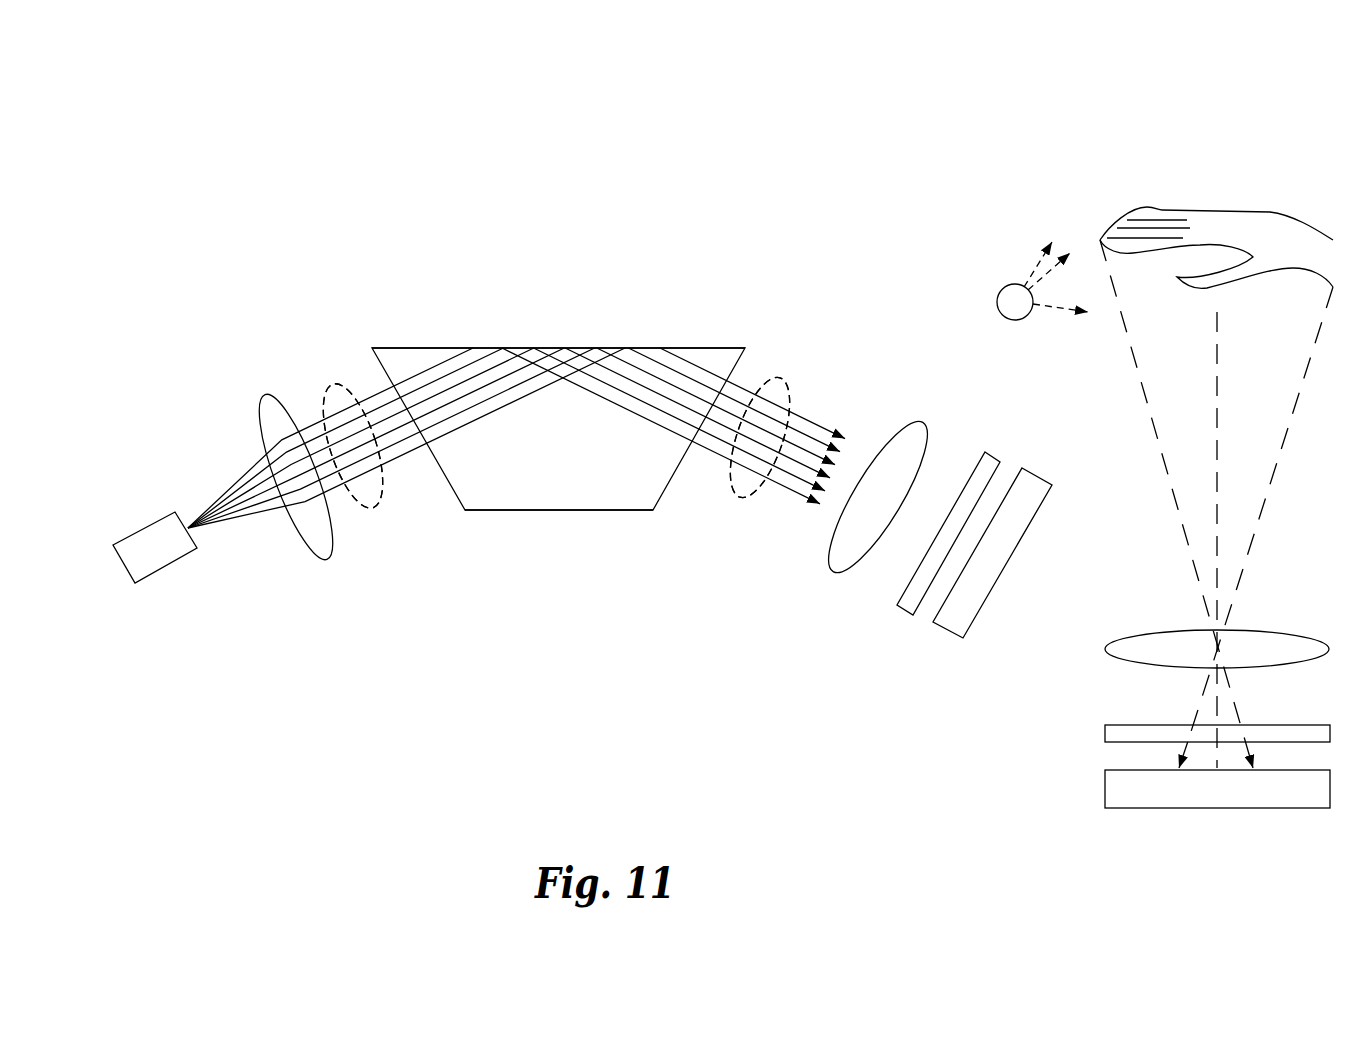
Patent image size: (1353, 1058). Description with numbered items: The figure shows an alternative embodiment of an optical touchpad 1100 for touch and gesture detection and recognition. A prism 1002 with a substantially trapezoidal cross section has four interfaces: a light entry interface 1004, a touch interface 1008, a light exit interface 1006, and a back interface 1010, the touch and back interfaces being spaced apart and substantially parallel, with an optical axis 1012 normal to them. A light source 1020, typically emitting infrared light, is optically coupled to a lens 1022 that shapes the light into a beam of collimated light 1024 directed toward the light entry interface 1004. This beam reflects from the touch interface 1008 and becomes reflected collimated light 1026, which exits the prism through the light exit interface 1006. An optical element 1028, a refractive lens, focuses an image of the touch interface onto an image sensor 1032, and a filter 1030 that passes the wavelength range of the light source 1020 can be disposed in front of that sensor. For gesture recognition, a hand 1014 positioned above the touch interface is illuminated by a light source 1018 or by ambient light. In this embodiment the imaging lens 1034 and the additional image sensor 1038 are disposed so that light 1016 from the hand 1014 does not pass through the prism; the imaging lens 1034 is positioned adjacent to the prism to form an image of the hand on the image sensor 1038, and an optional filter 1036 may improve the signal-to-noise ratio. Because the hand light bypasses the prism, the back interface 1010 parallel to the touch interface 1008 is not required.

The optical touchpad 1100 is at (236, 112).
The prism 1002 is at (593, 466).
The light entry interface 1004 is at (388, 492).
The light exit interface 1006 is at (782, 377).
The touch interface 1008 is at (693, 347).
The back interface 1010 is at (483, 512).
The optical axis 1012 is at (1217, 329).
The hand 1014 is at (1267, 212).
The light from hand 1016 is at (1247, 555).
The light source 1018 is at (995, 305).
The light source 1020 is at (183, 556).
The lens 1022 is at (322, 560).
The collimated light 1024 is at (335, 385).
The reflected collimated light 1026 is at (730, 485).
The optical element 1028 is at (846, 572).
The filter 1030 is at (985, 452).
The image sensor 1032 is at (978, 617).
The imaging lens 1034 is at (1105, 647).
The filter 1036 is at (1105, 732).
The image sensor 1038 is at (1125, 808).